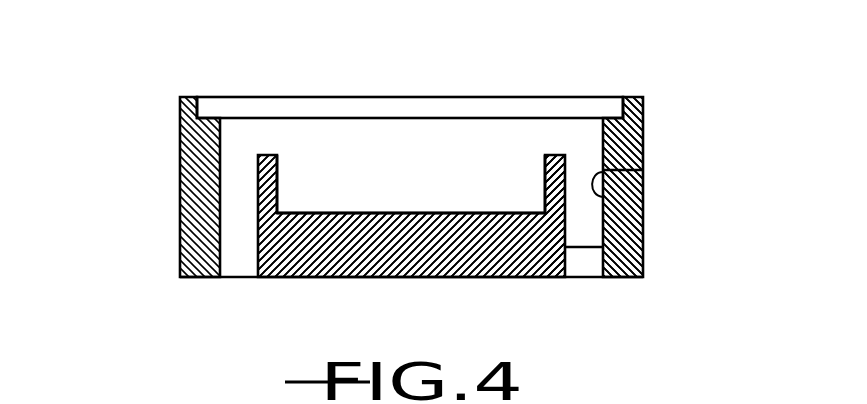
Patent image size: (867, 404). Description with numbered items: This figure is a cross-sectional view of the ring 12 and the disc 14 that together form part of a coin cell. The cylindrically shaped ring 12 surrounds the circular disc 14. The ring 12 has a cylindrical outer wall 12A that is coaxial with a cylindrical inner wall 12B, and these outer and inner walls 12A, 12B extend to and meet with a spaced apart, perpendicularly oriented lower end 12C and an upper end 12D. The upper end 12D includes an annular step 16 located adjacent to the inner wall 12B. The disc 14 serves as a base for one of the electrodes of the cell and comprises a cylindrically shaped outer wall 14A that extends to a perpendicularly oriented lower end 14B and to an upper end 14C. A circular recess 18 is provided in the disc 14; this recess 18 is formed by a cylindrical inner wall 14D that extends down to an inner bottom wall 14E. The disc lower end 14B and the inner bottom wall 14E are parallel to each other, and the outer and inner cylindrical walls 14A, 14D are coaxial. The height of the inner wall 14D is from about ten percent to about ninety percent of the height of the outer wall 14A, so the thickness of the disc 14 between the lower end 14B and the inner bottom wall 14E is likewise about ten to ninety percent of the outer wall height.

The ring 12 is at (398, 176).
The outer wall 12A is at (645, 143).
The inner wall 12B is at (645, 170).
The lower end 12C is at (620, 278).
The upper end 12D is at (635, 97).
The disc 14 is at (478, 182).
The outer wall 14A is at (603, 247).
The lower end 14B is at (493, 278).
The upper end 14C is at (553, 156).
The inner wall 14D is at (278, 182).
The inner bottom wall 14E is at (428, 212).
The annular step 16 is at (623, 113).
The recess 18 is at (346, 190).